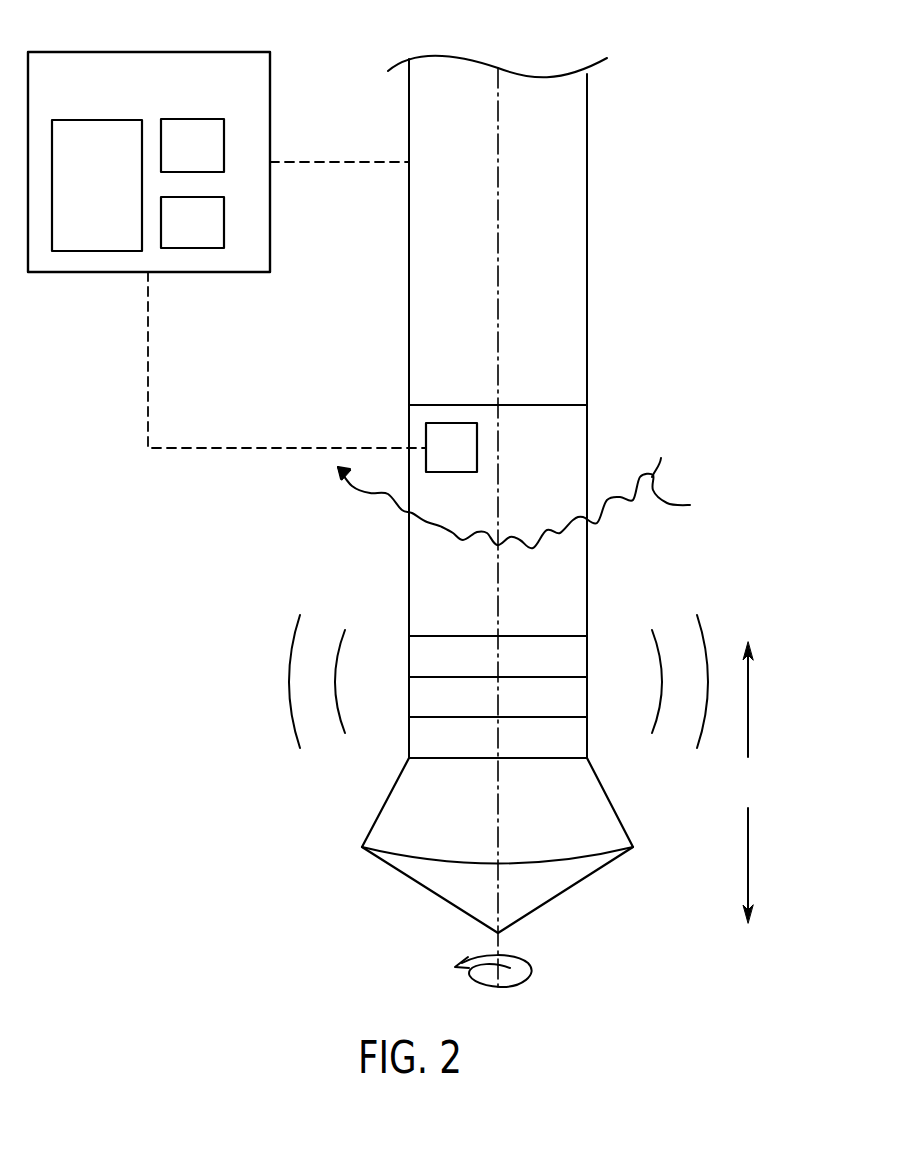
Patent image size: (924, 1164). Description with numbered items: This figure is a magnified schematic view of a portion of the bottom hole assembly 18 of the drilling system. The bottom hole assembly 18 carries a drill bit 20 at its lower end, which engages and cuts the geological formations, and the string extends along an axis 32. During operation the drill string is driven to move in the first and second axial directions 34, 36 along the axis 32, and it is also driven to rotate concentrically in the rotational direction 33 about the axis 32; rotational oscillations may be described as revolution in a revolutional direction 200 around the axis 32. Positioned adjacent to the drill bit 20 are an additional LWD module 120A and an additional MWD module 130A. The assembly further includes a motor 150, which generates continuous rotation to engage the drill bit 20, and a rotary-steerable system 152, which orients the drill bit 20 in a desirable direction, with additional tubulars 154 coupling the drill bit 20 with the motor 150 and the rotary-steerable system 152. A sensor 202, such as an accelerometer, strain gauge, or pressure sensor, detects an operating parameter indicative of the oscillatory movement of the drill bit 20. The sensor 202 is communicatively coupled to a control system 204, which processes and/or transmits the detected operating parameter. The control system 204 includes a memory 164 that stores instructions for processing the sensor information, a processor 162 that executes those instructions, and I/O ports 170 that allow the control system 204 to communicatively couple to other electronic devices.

The bottom hole assembly 18 is at (668, 125).
The drill bit 20 is at (592, 818).
The axis 32 is at (498, 224).
The rotational direction 33 is at (528, 503).
The first axial direction 34 is at (748, 862).
The second axial direction 36 is at (748, 705).
The additional LWD module 120A is at (567, 230).
The additional MWD module 130A is at (567, 446).
The motor 150 is at (552, 660).
The rotary-steerable system 152 is at (428, 696).
The additional tubulars 154 is at (570, 740).
The processor 162 is at (224, 144).
The memory 164 is at (97, 251).
The I/O ports 170 is at (193, 248).
The revolutional direction 200 is at (520, 962).
The sensor 202 is at (449, 423).
The control system 204 is at (227, 231).